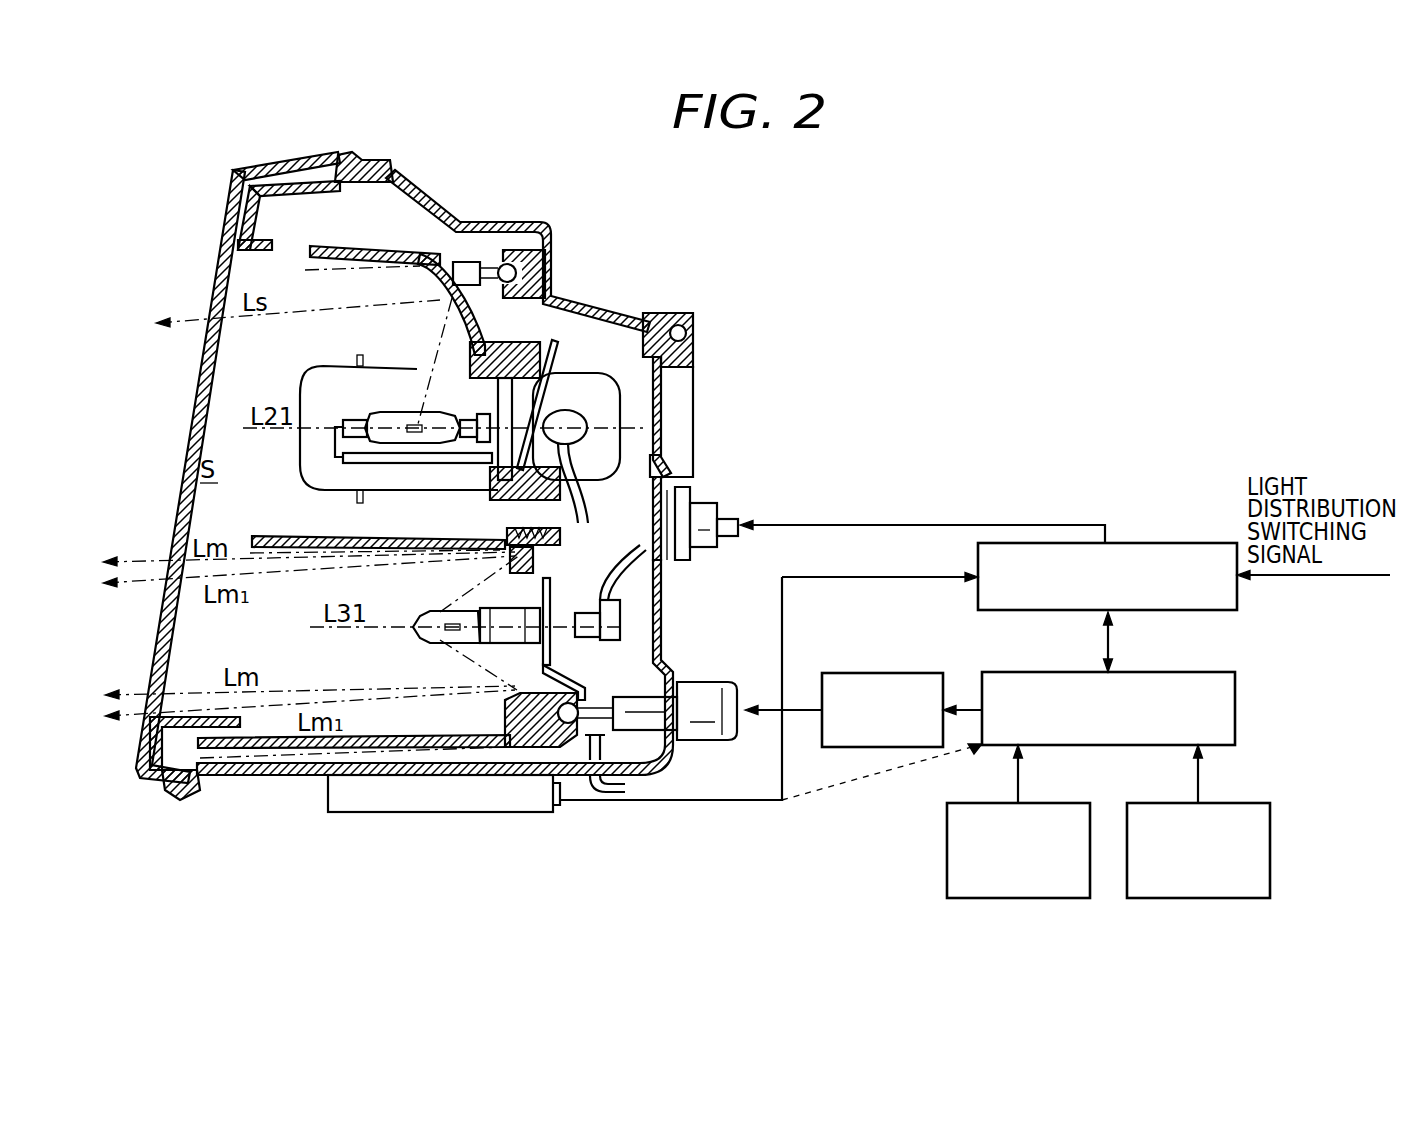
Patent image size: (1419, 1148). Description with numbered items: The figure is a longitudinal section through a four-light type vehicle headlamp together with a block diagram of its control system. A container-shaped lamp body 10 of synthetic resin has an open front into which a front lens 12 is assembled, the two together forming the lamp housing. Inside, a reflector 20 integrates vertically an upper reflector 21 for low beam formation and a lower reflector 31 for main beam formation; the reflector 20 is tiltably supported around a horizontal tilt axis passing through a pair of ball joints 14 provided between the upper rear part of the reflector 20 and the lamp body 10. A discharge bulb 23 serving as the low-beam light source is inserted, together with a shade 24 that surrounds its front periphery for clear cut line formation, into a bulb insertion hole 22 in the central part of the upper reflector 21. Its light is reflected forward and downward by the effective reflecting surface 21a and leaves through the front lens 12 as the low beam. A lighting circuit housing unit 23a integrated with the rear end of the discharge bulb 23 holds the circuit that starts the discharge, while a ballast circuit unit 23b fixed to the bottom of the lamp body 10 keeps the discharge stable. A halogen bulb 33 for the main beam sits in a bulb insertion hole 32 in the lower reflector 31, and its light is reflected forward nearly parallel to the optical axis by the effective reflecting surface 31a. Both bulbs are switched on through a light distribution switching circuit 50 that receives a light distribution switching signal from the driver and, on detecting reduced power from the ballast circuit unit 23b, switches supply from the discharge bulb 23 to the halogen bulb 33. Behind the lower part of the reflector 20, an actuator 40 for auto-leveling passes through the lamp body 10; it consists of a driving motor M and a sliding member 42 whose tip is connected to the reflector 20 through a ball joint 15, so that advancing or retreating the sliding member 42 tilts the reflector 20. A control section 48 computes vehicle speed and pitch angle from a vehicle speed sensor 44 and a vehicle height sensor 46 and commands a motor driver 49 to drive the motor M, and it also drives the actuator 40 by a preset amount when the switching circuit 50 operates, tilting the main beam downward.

The lamp body 10 is at (545, 224).
The front lens 12 is at (192, 384).
The ball joint 14 is at (550, 272).
The ball joint 15 is at (600, 762).
The reflector 20 is at (376, 238).
The reflector for low beam formation 21 is at (415, 252).
The effective reflecting surface 21a is at (430, 258).
The bulb insertion hole 22 is at (548, 380).
The discharge bulb 23 is at (395, 408).
The lighting circuit housing unit 23a is at (608, 392).
The ballast circuit unit 23b is at (355, 805).
The shade 24 is at (300, 382).
The reflector for main beam formation 31 is at (475, 750).
The effective reflecting surface 31a is at (527, 560).
The bulb insertion hole 32 is at (612, 592).
The halogen bulb 33 is at (433, 645).
The actuator 40 is at (657, 785).
The sliding member 42 is at (622, 732).
The driving motor M is at (705, 742).
The vehicle speed sensor 44 is at (1270, 820).
The vehicle height sensor 46 is at (947, 826).
The control section 48 is at (1237, 687).
The motor driver 49 is at (928, 673).
The light distribution switching circuit 50 is at (1170, 543).